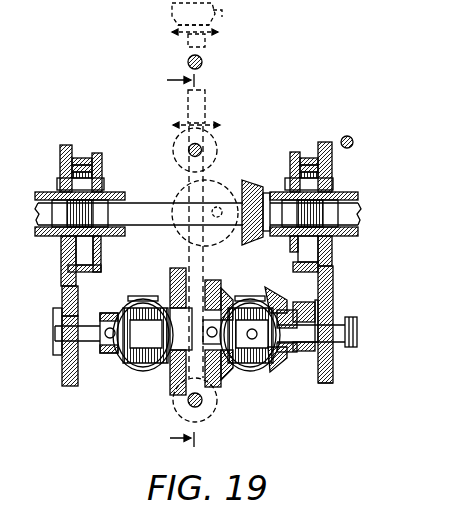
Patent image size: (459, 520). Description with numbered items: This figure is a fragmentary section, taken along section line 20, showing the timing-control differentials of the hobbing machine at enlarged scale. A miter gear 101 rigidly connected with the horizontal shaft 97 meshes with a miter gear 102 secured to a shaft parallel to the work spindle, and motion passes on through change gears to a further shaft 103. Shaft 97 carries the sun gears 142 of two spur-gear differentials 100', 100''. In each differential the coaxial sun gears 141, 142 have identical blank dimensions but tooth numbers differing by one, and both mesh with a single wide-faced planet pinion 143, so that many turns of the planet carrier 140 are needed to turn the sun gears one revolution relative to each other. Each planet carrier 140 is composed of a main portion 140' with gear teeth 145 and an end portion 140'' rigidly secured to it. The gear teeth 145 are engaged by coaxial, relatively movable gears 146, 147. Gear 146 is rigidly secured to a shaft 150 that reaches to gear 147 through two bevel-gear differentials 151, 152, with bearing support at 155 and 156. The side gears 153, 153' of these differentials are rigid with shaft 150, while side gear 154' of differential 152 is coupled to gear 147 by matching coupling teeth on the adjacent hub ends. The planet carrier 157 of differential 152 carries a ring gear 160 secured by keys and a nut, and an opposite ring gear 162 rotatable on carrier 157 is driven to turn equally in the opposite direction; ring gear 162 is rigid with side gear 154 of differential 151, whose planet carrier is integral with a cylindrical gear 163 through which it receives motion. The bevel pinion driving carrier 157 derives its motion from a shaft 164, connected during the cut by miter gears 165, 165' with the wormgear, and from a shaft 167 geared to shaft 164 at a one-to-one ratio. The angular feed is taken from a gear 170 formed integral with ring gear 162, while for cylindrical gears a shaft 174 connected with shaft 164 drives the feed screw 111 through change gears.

The section line 20 is at (202, 262).
The shaft 97 is at (153, 228).
The differential 100' is at (80, 169).
The differential 100'' is at (315, 169).
The miter gear 101 is at (252, 201).
The miter gear 102 is at (192, 198).
The shaft 103 is at (350, 139).
The feed screw 111 is at (188, 62).
The planet carrier 140 is at (349, 167).
The main portion of planet carrier 140' is at (61, 170).
The end portion of planet carrier 140'' is at (119, 150).
The sun gear 141 is at (62, 243).
The sun gear 142 is at (100, 240).
The planet pinion 143 is at (106, 171).
The gear teeth 145 is at (64, 143).
The gear 146 is at (70, 387).
The gear 147 is at (335, 387).
The shaft 150 is at (70, 333).
The bevel-gear differential 151 is at (140, 297).
The bevel-gear differential 152 is at (258, 300).
The side gear 153 is at (133, 347).
The side gear 153' is at (277, 362).
The side gear 154 is at (146, 354).
The side gear 154' is at (267, 362).
The bearing support 155 is at (63, 300).
The bearing support 156 is at (306, 352).
The planet carrier 157 is at (334, 295).
The ring gear 160 is at (270, 373).
The ring gear 162 is at (207, 406).
The cylindrical gear 163 is at (178, 274).
The shaft 164 is at (200, 107).
The miter gear 165 is at (216, 14).
The miter gear 165' is at (216, 39).
The shaft 167 is at (185, 408).
The gear 170 is at (210, 282).
The shaft 174 is at (202, 150).